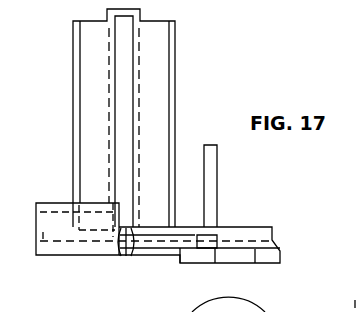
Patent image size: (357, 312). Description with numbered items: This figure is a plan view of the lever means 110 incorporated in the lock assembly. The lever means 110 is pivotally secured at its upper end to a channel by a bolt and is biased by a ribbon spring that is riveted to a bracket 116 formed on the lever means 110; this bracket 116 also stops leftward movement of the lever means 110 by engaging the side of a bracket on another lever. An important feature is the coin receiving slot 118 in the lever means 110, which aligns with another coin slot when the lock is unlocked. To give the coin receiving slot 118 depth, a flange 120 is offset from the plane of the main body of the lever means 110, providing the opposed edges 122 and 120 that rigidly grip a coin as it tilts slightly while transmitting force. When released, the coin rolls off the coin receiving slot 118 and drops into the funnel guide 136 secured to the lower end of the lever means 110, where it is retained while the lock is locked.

The lever means 110 is at (283, 250).
The bracket 116 is at (213, 182).
The coin receiving slot 118 is at (121, 256).
The flange 120 is at (128, 245).
The edge 122 is at (131, 248).
The funnel guide 136 is at (102, 82).